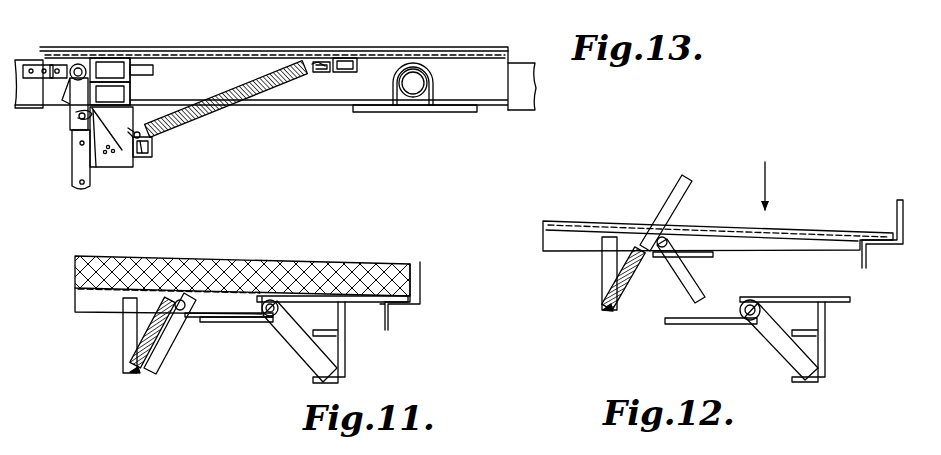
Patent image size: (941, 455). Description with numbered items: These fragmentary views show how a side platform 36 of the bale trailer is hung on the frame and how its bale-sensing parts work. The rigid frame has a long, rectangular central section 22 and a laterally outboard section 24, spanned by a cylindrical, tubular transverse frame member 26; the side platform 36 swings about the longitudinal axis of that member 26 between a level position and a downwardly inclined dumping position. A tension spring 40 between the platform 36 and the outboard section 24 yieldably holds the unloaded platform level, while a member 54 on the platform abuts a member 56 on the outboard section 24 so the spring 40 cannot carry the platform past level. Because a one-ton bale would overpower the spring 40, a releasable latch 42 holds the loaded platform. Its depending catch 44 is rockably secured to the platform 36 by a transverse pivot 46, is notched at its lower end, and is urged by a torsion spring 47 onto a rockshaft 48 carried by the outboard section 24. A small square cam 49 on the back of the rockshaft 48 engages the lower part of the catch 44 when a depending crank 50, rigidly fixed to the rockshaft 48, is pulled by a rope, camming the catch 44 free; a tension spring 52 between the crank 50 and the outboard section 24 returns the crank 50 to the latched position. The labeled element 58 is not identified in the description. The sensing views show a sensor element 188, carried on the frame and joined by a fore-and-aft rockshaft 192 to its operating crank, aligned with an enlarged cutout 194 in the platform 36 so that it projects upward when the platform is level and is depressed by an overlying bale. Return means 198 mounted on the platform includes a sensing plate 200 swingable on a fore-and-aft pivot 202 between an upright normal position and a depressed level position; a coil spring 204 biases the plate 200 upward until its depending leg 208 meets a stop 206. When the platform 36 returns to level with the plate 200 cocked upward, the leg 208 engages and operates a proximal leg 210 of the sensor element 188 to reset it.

In FIG. 13, the central section 22 is at (540, 101).
In FIG. 13, the outboard section 24 is at (140, 95).
In FIG. 11, the outboard section 24 is at (348, 371).
In FIG. 12, the outboard section 24 is at (828, 374).
In FIG. 13, the transverse frame member 26 is at (425, 106).
In FIG. 13, the side platform 36 is at (410, 44).
In FIG. 11, the side platform 36 is at (430, 297).
In FIG. 12, the side platform 36 is at (855, 218).
In FIG. 13, the tension spring 40 is at (213, 113).
In FIG. 13, the releasable latch 42 is at (66, 138).
In FIG. 13, the catch 44 is at (72, 110).
In FIG. 13, the pivot 46 is at (80, 65).
In FIG. 13, the torsion spring 47 is at (58, 64).
In FIG. 13, the rockshaft 48 is at (80, 120).
In FIG. 13, the cam 49 is at (98, 163).
In FIG. 13, the crank 50 is at (82, 188).
In FIG. 13, the tension spring 52 is at (140, 157).
In FIG. 13, the abutment member 54 is at (118, 58).
In FIG. 13, the abutment member 56 is at (130, 88).
In FIG. 11, the element 58 is at (148, 452).
In FIG. 11, the sensor element 188 is at (355, 295).
In FIG. 12, the sensor element 188 is at (775, 297).
In FIG. 11, the rockshaft 192 is at (273, 320).
In FIG. 12, the rockshaft 192 is at (760, 323).
In FIG. 11, the cutout 194 is at (287, 268).
In FIG. 12, the cutout 194 is at (790, 228).
In FIG. 11, the return means 198 is at (185, 338).
In FIG. 12, the return means 198 is at (658, 210).
In FIG. 11, the sensing plate 200 is at (203, 296).
In FIG. 12, the sensing plate 200 is at (673, 185).
In FIG. 11, the pivot 202 is at (181, 300).
In FIG. 12, the pivot 202 is at (666, 238).
In FIG. 11, the coil spring 204 is at (138, 346).
In FIG. 12, the coil spring 204 is at (618, 276).
In FIG. 11, the stop 206 is at (227, 318).
In FIG. 12, the stop 206 is at (700, 258).
In FIG. 11, the depending leg 208 is at (152, 363).
In FIG. 12, the depending leg 208 is at (680, 290).
In FIG. 11, the proximal leg 210 is at (244, 322).
In FIG. 12, the proximal leg 210 is at (690, 325).